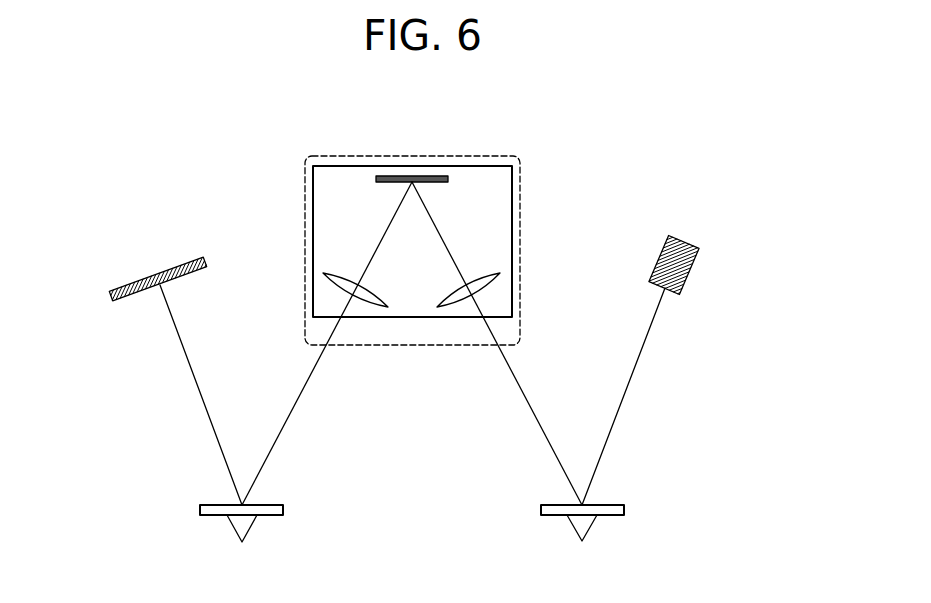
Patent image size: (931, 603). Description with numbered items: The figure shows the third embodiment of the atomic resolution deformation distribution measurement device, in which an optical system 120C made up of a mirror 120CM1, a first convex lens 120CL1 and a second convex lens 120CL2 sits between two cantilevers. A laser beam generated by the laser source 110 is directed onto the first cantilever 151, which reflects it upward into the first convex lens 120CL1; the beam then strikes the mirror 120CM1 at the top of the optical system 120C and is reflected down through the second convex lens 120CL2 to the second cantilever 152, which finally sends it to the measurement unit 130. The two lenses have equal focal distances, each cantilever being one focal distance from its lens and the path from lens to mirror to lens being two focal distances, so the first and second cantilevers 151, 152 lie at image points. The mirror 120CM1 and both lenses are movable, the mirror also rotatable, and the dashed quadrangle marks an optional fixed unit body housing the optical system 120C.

The laser source 110 is at (683, 240).
The optical system 120C is at (500, 156).
The mirror 120CM1 is at (400, 176).
The first convex lens 120CL1 is at (492, 272).
The second convex lens 120CL2 is at (333, 273).
The measurement unit 130 is at (140, 280).
The first cantilever 151 is at (583, 522).
The second cantilever 152 is at (237, 523).